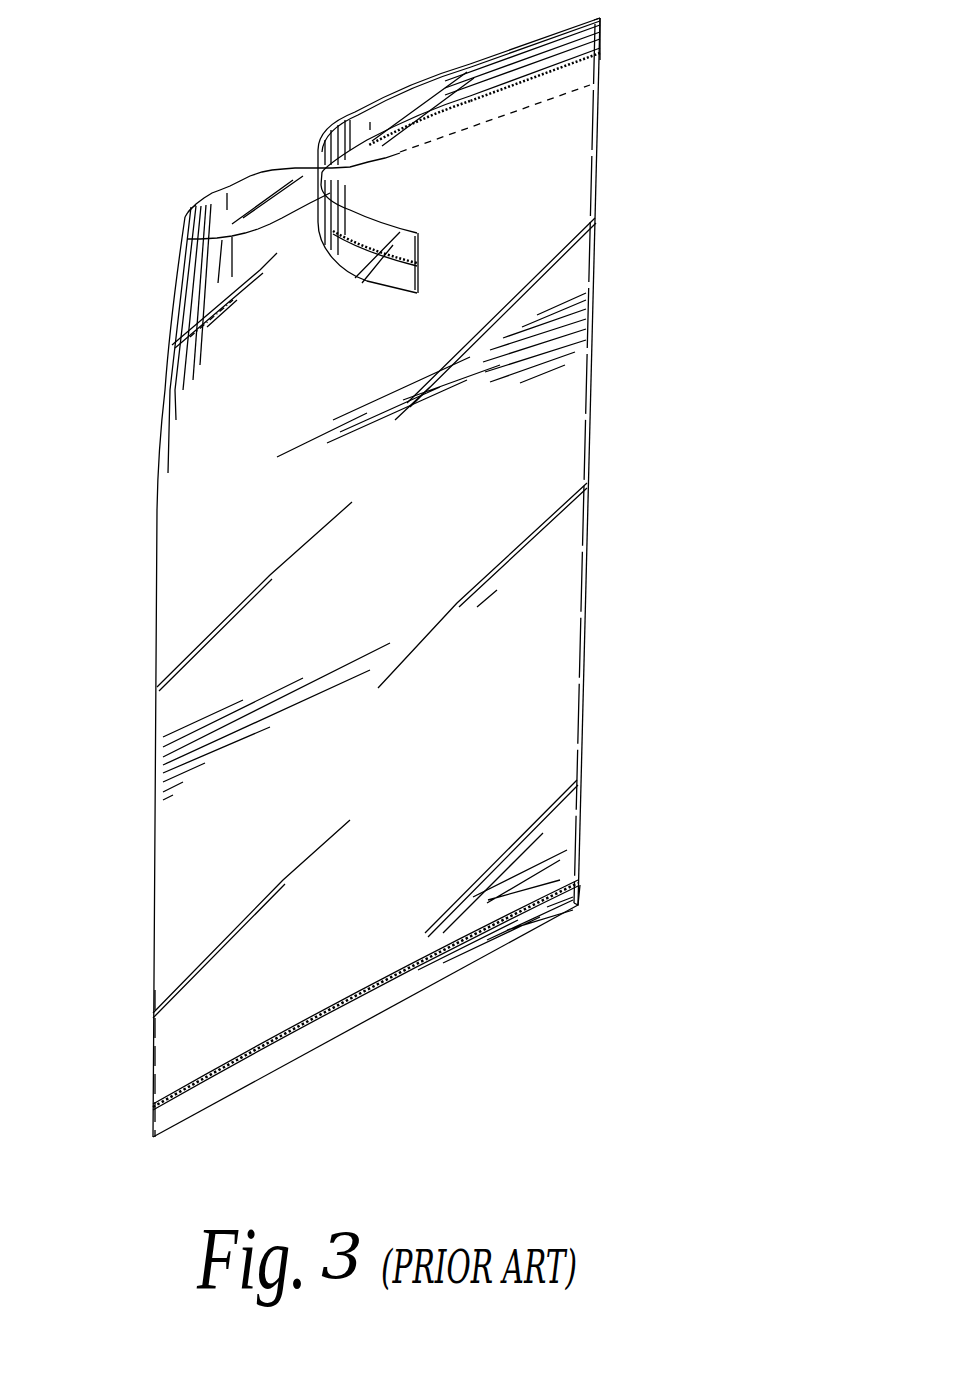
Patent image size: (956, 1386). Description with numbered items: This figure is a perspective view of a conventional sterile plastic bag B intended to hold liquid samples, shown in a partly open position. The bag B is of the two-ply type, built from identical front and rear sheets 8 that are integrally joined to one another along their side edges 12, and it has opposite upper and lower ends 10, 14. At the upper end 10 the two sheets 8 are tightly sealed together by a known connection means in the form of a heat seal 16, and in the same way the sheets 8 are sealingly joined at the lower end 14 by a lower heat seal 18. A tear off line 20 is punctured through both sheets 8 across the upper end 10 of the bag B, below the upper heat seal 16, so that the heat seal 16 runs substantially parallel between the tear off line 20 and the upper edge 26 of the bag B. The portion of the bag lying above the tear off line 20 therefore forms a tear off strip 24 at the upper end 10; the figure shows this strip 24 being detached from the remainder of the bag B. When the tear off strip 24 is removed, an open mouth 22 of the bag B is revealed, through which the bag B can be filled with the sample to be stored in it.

The front and rear sheets 8 is at (260, 190).
The upper end 10 is at (614, 33).
The side edges 12 is at (155, 510).
The lower end 14 is at (598, 889).
The heat seal 16 is at (488, 92).
The lower heat seal 18 is at (283, 1037).
The tear off line 20 is at (499, 118).
The open mouth 22 is at (217, 223).
The tear off strip 24 is at (353, 233).
The upper edge 26 is at (398, 92).
The bag B is at (640, 238).